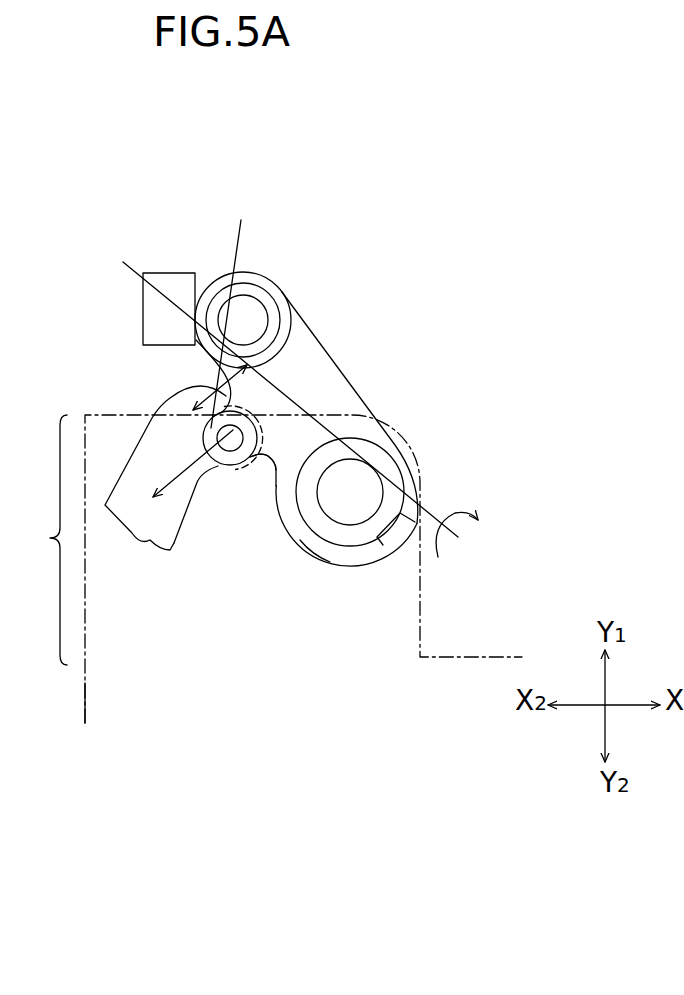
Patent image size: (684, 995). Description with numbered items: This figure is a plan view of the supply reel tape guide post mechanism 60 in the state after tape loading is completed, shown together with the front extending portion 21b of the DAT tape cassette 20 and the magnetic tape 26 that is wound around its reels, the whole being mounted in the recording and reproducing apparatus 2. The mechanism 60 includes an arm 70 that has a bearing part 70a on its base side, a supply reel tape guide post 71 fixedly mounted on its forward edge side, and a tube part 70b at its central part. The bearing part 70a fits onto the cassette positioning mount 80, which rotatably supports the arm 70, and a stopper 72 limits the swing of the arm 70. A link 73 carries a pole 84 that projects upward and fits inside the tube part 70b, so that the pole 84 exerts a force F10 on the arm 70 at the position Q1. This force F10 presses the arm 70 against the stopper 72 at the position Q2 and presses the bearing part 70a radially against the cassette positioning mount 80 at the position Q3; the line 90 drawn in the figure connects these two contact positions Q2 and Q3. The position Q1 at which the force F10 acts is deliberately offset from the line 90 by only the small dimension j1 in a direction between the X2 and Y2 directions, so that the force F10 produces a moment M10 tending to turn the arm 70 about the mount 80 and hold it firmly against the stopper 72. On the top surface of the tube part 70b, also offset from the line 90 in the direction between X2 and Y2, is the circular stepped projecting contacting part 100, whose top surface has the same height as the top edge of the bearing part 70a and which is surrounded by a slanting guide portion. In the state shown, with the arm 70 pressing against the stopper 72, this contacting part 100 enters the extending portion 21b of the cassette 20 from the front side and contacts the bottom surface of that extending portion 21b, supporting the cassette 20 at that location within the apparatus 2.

The image forming apparatus frame 2 is at (262, 569).
The DAT tape cassette 20 is at (107, 683).
The extending portion 21b is at (39, 540).
The magnetic tape 26 is at (237, 238).
The supply reel tape guide post mechanism 60 is at (388, 217).
The arm 70 is at (298, 332).
The bearing part 70a is at (323, 527).
The tube part 70b is at (208, 477).
The supply reel tape guide post 71 is at (252, 310).
The stopper 72 is at (170, 273).
The link 73 is at (153, 517).
The cassette positioning mount 80 is at (350, 507).
The pole 84 is at (233, 440).
The line 90 is at (292, 397).
The circular stepped projecting contacting part 100 is at (250, 457).
The position Q1 is at (232, 470).
The position Q2 is at (195, 318).
The position Q3 is at (368, 467).
The dimension j1 is at (215, 380).
The force F10 is at (184, 463).
The rotation moment M10 is at (484, 530).